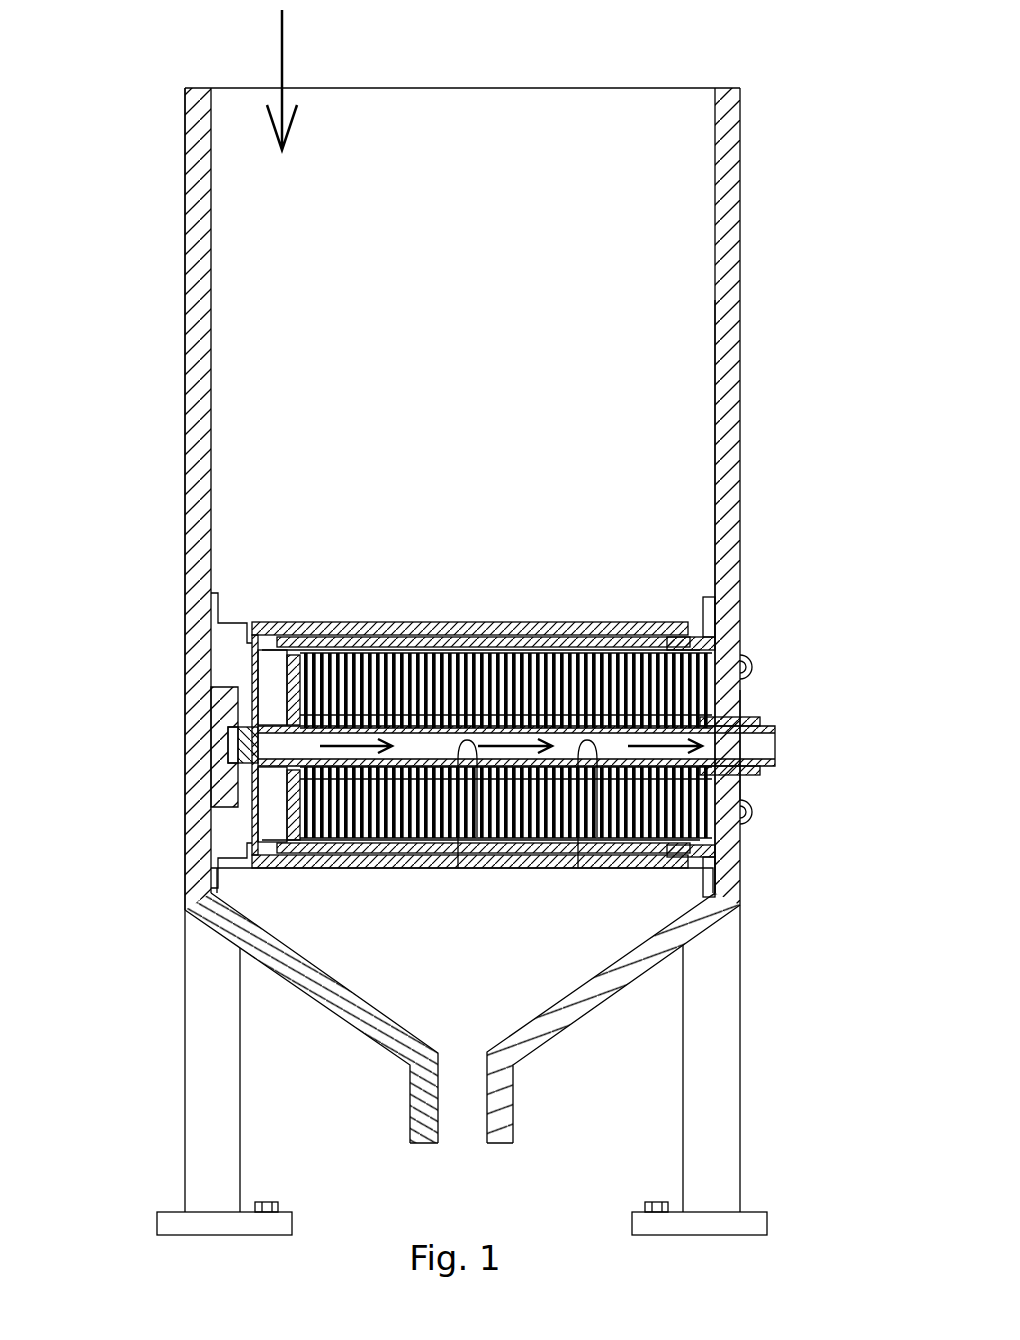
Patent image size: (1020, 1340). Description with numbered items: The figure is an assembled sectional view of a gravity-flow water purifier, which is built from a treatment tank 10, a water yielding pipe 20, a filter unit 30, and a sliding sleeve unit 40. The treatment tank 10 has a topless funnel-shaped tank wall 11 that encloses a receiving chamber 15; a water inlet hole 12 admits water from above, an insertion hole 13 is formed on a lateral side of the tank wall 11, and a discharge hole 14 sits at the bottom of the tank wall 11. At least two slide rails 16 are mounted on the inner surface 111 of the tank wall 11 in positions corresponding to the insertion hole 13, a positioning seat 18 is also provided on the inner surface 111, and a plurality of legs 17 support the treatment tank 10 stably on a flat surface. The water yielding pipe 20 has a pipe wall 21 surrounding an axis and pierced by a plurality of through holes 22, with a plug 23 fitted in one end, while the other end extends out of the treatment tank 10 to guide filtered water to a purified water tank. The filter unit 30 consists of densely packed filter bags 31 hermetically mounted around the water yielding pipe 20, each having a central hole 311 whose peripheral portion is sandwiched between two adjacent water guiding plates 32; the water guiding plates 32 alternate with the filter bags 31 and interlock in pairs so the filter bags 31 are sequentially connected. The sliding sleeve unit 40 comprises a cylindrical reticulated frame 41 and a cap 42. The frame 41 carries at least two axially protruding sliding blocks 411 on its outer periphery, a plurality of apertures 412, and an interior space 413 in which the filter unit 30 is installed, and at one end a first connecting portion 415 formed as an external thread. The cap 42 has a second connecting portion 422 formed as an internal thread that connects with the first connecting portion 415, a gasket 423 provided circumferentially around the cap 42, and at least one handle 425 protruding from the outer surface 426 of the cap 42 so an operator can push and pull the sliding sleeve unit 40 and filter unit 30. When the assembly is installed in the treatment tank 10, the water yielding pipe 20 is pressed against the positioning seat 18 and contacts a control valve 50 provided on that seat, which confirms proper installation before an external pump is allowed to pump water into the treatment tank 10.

The treatment tank 10 is at (195, 345).
The tank wall 11 is at (735, 430).
The inner surface 111 is at (700, 480).
The water inlet hole 12 is at (487, 112).
The insertion hole 13 is at (740, 880).
The discharge hole 14 is at (460, 1143).
The receiving chamber 15 is at (235, 492).
The slide rails 16 is at (412, 632).
The legs 17 is at (210, 1135).
The positioning seat 18 is at (215, 795).
The water yielding pipe 20 is at (782, 742).
The pipe wall 21 is at (745, 750).
The through holes 22 is at (458, 870).
The plug 23 is at (248, 755).
The filter unit 30 is at (706, 818).
The filter bags 31 is at (620, 640).
The central hole 311 is at (298, 866).
The water guiding plates 32 is at (262, 710).
The sliding sleeve unit 40 is at (240, 828).
The frame 41 is at (250, 664).
The cap 42 is at (744, 858).
The control valve 50 is at (222, 731).
The sliding blocks 411 is at (520, 640).
The apertures 412 is at (350, 640).
The interior space 413 is at (270, 640).
The first connecting portion 415 is at (700, 575).
The second connecting portion 422 is at (709, 877).
The gasket 423 is at (728, 634).
The handles 425 is at (752, 665).
The outer surface 426 is at (742, 700).